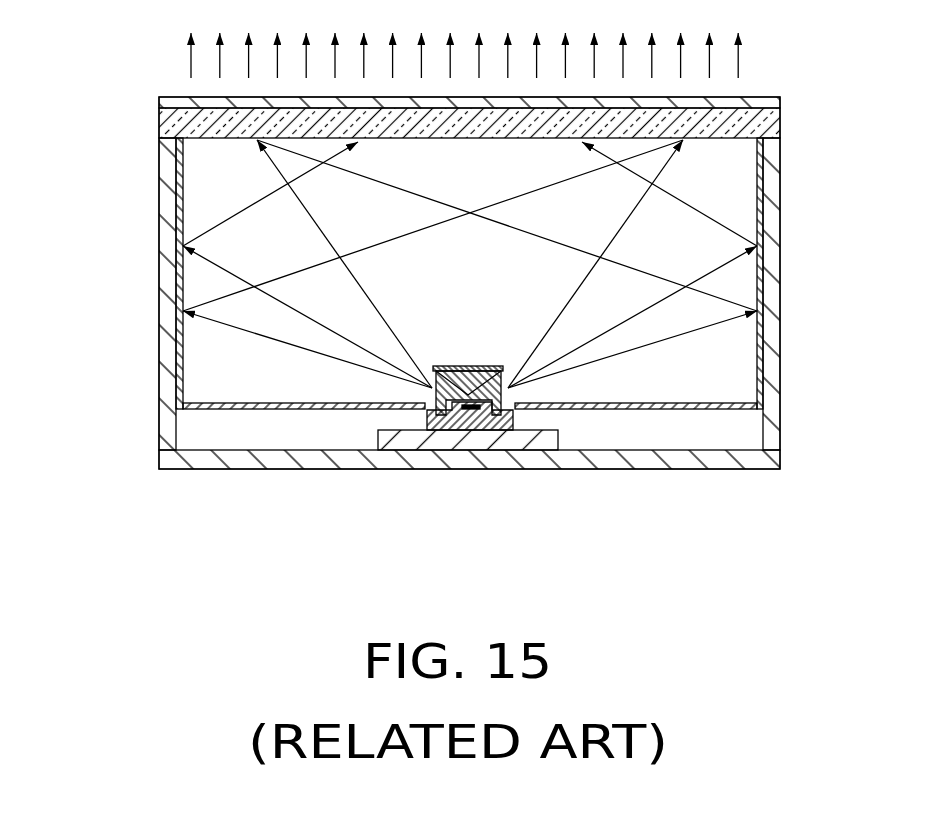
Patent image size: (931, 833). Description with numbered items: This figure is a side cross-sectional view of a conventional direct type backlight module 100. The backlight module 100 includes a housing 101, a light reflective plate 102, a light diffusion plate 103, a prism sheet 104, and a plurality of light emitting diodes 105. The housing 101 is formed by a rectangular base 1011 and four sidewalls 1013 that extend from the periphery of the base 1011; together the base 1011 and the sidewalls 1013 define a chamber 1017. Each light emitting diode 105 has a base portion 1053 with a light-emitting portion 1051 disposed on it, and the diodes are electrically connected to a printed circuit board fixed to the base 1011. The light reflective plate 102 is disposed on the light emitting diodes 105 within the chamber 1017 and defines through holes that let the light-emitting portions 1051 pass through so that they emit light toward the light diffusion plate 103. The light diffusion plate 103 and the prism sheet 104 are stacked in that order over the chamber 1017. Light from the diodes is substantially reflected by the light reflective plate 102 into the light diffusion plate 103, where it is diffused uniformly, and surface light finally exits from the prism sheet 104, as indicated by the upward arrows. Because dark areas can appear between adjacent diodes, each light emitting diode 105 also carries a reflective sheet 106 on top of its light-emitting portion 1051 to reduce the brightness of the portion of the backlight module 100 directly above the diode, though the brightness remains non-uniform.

The backlight module 100 is at (138, 63).
The housing 101 is at (400, 323).
The base 1011 is at (426, 479).
The sidewalls 1013 is at (167, 348).
The chamber 1017 is at (740, 168).
The light reflective plate 102 is at (688, 405).
The light diffusion plate 103 is at (770, 122).
The prism sheet 104 is at (743, 103).
The light emitting diode 105 is at (455, 491).
The light-emitting portion 1051 is at (437, 395).
The base portion 1053 is at (457, 412).
The reflective sheet 106 is at (458, 366).